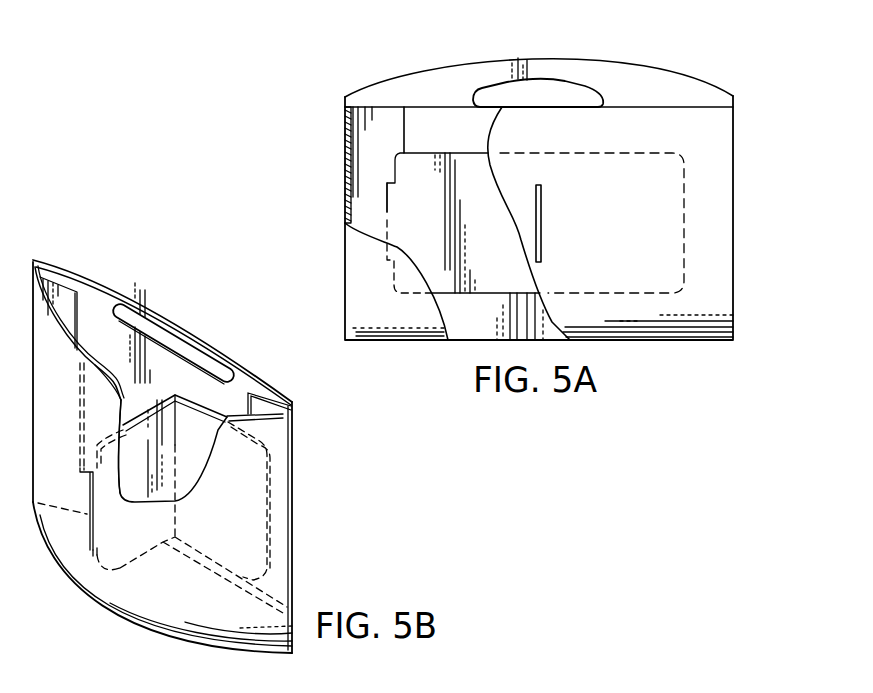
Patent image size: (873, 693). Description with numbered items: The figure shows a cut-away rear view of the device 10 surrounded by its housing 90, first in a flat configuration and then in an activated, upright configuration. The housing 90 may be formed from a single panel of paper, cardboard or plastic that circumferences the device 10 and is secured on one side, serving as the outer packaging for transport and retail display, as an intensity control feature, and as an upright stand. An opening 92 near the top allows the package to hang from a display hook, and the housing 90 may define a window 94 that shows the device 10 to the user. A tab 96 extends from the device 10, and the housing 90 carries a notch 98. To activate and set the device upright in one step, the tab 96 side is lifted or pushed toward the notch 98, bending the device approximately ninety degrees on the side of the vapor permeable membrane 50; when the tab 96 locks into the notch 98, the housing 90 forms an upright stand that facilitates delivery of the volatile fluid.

In FIG. 5B, the device 10 is at (270, 516).
In FIG. 5B, the vapor permeable membrane 50 is at (188, 435).
In FIG. 5A, the housing 90 is at (736, 146).
In FIG. 5A, the opening 92 is at (560, 95).
In FIG. 5B, the opening 92 is at (183, 342).
In FIG. 5B, the window 94 is at (138, 397).
In FIG. 5A, the tab 96 is at (387, 212).
In FIG. 5B, the tab 96 is at (92, 507).
In FIG. 5A, the notch 98 is at (542, 240).